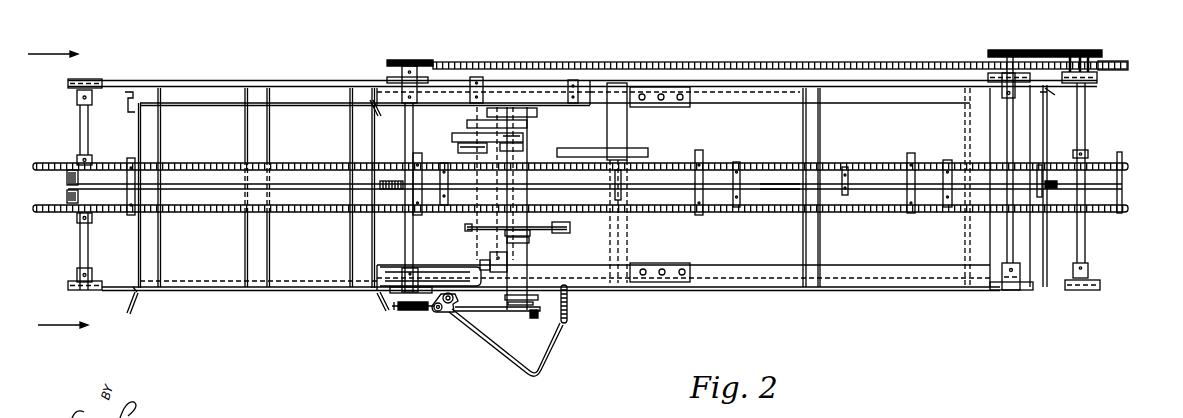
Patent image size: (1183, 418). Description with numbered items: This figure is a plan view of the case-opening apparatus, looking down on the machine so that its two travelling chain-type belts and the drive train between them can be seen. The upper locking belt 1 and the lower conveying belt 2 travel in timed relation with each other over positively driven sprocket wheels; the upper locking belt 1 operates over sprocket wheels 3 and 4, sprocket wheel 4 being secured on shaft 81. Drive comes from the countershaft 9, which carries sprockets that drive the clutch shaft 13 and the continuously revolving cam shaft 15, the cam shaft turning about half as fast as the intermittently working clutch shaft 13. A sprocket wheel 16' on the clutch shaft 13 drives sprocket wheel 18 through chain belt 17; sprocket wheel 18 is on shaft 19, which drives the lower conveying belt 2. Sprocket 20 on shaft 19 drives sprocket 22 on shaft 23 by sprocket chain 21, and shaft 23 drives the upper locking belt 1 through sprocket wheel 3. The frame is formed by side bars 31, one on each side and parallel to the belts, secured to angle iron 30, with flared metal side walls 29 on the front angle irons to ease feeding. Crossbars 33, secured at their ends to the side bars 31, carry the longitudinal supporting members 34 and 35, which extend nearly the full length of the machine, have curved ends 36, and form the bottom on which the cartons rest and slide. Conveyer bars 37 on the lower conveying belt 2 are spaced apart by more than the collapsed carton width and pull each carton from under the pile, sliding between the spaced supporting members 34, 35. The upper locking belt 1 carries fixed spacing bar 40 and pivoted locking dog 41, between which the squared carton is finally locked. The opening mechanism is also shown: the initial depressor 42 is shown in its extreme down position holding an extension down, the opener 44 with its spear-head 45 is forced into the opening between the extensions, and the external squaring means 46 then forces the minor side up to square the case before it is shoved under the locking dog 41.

The upper locking belt 1 is at (762, 175).
The lower conveying belt 2 is at (286, 163).
The sprocket wheel 3 is at (58, 191).
The sprocket wheel 4 is at (384, 180).
The shaft 9 is at (523, 241).
The clutch shaft 13 is at (470, 215).
The cam shaft 15 is at (516, 156).
The sprocket wheel 16' is at (434, 67).
The chain belt 17 is at (713, 63).
The sprocket wheel 18 is at (1107, 60).
The shaft 19 is at (1081, 121).
The sprocket 20 is at (1092, 50).
The sprocket chain 21 is at (1047, 52).
The sprocket 22 is at (1018, 53).
The shaft 23 is at (1010, 135).
The metal side walls 29 is at (183, 106).
The angle iron 30 is at (130, 98).
The side bars 31 is at (315, 81).
The crossbars 33 is at (158, 258).
The longitudinal supporting member 34 is at (186, 175).
The longitudinal supporting member 35 is at (200, 211).
The curved ends 36 is at (67, 197).
The conveyer bar 37 is at (130, 160).
The spacing bar 40 is at (622, 173).
The locking dog 41 is at (739, 162).
The initial depressor 42 is at (488, 261).
The opener 44 is at (561, 346).
The spear-head 45 is at (567, 312).
The external squaring means 46 is at (636, 147).
The shaft 81 is at (410, 253).